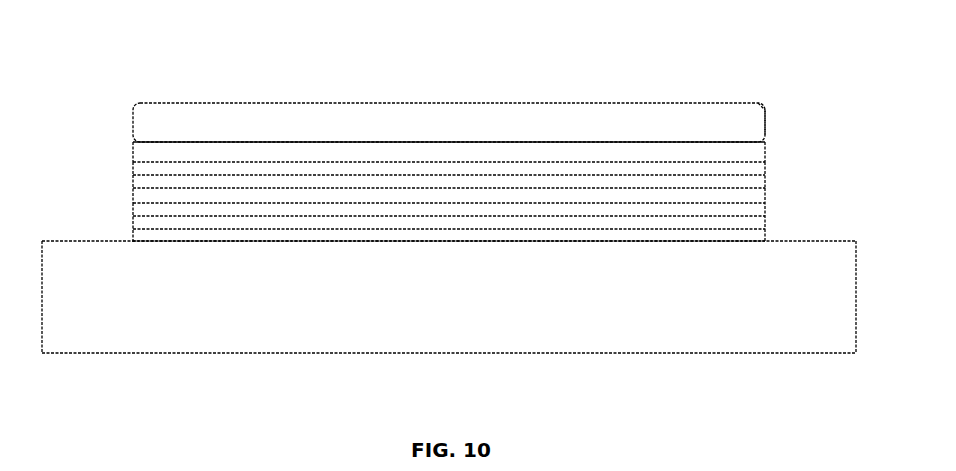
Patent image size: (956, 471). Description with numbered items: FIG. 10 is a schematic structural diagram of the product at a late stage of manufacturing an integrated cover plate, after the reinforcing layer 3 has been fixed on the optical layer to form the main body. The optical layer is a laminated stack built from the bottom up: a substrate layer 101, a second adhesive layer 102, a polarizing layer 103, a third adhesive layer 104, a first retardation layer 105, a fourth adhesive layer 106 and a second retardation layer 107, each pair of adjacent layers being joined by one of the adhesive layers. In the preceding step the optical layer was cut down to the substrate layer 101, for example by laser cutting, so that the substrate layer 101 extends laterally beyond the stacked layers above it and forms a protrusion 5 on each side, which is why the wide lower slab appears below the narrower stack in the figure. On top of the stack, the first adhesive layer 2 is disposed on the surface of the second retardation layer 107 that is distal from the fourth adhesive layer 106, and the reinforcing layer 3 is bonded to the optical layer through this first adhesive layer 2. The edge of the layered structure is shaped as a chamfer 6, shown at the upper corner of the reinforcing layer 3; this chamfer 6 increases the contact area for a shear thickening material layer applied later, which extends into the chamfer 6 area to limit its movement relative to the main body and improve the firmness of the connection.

The first adhesive layer 2 is at (449, 104).
The reinforcing layer 3 is at (449, 94).
The protrusion 5 is at (449, 326).
The chamfer 6 is at (782, 90).
The substrate layer 101 is at (449, 327).
The second adhesive layer 102 is at (481, 207).
The polarizing layer 103 is at (481, 182).
The third adhesive layer 104 is at (416, 203).
The first retardation layer 105 is at (416, 166).
The fourth adhesive layer 106 is at (481, 144).
The second retardation layer 107 is at (416, 134).